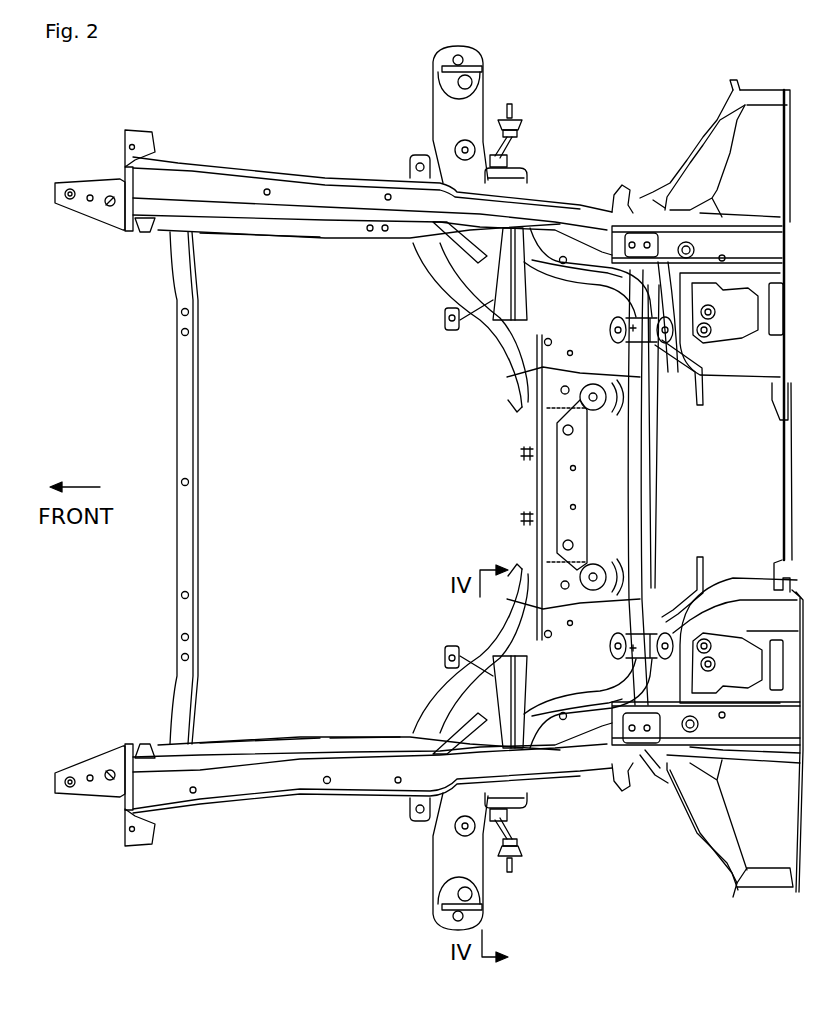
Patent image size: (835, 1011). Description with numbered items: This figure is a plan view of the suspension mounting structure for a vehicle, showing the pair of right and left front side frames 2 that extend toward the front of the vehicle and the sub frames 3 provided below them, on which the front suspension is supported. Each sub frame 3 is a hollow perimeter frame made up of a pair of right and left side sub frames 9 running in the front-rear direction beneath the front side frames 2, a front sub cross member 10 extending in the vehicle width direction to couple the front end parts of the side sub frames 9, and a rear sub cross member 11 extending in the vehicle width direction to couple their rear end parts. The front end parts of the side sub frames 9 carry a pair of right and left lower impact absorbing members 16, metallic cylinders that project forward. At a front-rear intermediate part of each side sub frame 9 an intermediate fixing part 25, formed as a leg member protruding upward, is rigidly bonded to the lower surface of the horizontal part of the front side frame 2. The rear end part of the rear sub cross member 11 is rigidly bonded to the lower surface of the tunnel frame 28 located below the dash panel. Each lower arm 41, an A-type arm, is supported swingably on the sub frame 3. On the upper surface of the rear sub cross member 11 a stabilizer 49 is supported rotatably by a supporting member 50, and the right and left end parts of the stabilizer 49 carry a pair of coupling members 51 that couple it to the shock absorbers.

The front side frame 2 is at (352, 176).
The sub frame 3 is at (353, 719).
The side sub frame 9 is at (248, 238).
The front sub cross member 10 is at (175, 452).
The rear sub cross member 11 is at (530, 497).
The lower impact absorbing member 16 is at (97, 185).
The intermediate fixing part 25 is at (446, 318).
The tunnel frame 28 is at (730, 380).
The lower arm 41 is at (440, 87).
The stabilizer 49 is at (636, 488).
The supporting member 50 is at (611, 320).
The coupling member 51 is at (512, 149).